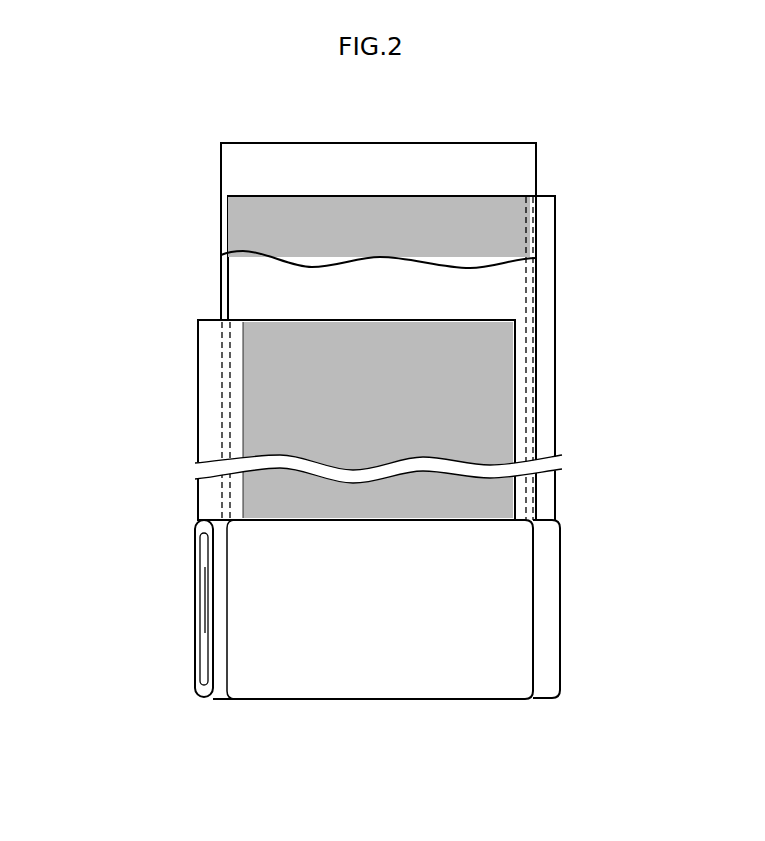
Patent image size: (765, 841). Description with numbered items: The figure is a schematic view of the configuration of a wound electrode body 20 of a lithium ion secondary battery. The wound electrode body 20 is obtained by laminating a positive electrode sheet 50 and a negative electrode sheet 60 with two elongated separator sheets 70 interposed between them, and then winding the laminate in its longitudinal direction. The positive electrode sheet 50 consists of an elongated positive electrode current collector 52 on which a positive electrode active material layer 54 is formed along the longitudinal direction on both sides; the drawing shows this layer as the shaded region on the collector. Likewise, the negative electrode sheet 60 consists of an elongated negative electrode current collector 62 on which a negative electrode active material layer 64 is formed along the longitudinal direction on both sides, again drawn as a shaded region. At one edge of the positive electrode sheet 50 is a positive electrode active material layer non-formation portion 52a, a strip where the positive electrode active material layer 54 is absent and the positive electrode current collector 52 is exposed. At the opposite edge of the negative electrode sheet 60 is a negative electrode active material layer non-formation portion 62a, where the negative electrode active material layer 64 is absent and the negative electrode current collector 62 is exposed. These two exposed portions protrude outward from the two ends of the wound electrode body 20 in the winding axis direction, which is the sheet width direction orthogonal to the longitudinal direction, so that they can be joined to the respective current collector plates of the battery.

The wound electrode body 20 is at (435, 680).
The positive electrode sheet 50 is at (197, 388).
The positive electrode current collector 52 is at (197, 450).
The positive electrode active material layer non-formation portion 52a is at (213, 420).
The positive electrode active material layer 54 is at (255, 338).
The negative electrode sheet 60 is at (557, 268).
The negative electrode current collector 62 is at (555, 363).
The negative electrode active material layer non-formation portion 62a is at (542, 335).
The negative electrode active material layer 64 is at (522, 218).
The separator sheet 70 is at (240, 162).